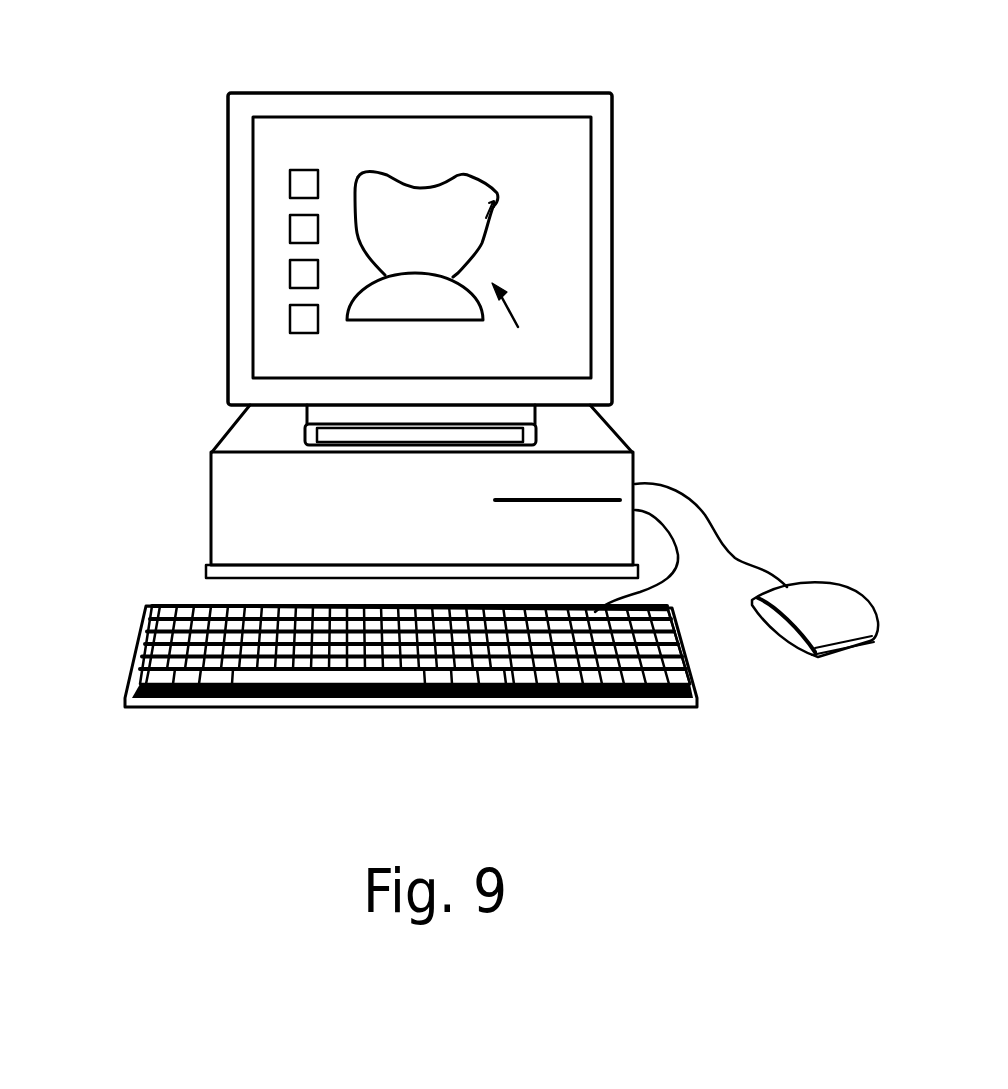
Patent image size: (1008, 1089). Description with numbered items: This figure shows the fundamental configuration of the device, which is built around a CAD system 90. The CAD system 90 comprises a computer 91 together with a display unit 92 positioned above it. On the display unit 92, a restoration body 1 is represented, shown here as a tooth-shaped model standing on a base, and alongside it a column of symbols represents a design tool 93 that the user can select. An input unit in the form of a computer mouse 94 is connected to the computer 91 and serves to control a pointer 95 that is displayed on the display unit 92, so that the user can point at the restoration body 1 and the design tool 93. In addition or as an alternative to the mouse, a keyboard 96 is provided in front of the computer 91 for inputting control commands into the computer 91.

The CAD system 90 is at (642, 80).
The display unit 92 is at (328, 92).
The design tool 93 is at (283, 185).
The restoration body 1 is at (413, 207).
The pointer 95 is at (510, 307).
The computer 91 is at (237, 490).
The computer mouse 94 is at (843, 603).
The keyboard 96 is at (136, 647).